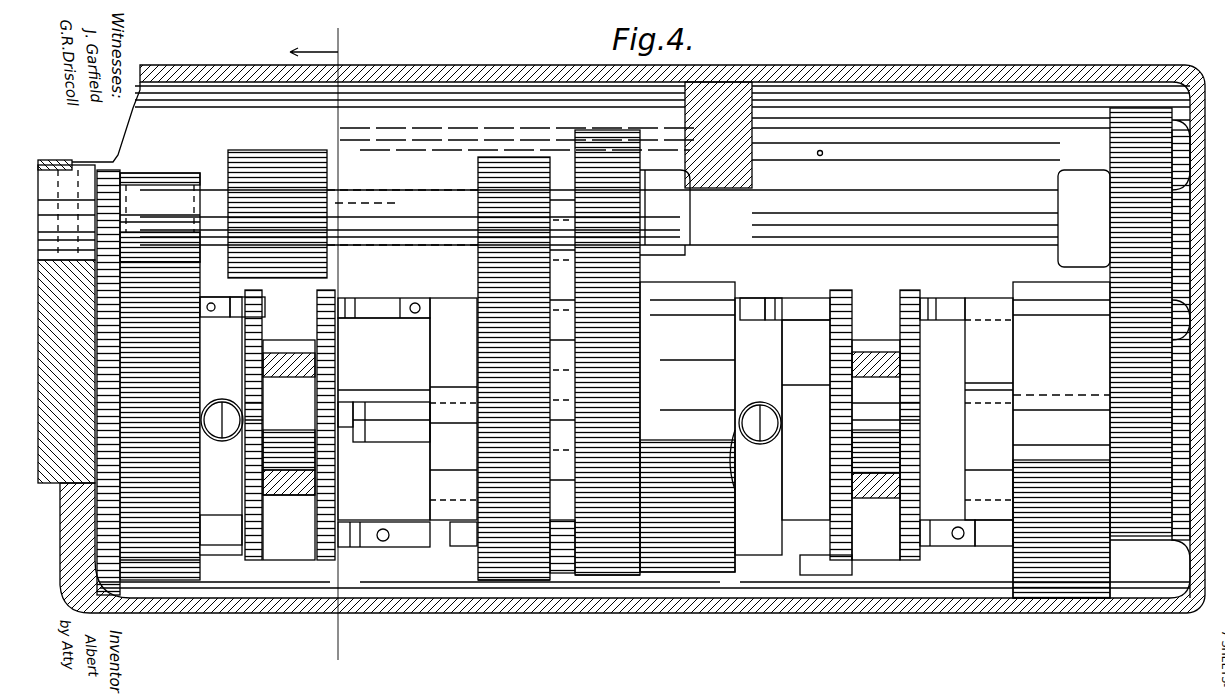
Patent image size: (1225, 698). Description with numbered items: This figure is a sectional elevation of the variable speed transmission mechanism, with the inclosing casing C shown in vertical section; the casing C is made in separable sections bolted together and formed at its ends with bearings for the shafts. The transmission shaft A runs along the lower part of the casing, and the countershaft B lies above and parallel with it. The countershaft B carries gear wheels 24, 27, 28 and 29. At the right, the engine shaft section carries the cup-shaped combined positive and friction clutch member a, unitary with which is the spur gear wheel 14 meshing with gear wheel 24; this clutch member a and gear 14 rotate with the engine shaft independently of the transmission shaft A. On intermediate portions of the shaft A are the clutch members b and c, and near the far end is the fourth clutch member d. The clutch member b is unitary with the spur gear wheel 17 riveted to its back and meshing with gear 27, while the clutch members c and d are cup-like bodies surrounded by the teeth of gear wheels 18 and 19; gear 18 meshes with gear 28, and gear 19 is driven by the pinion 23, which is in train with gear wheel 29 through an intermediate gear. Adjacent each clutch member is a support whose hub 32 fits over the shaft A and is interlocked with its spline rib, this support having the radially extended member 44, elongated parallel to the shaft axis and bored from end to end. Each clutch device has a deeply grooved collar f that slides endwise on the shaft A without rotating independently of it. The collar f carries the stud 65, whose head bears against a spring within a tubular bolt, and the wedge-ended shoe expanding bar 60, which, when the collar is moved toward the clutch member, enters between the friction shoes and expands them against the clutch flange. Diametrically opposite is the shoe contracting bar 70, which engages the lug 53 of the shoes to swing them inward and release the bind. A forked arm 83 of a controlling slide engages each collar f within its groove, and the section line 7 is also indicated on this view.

The section line 7 is at (321, 350).
The spur gear wheel 14 is at (1125, 397).
The spur gear wheel 17 is at (625, 575).
The gear wheel 18 is at (480, 550).
The spur gear wheel 19 is at (195, 558).
The pinion 23 is at (162, 175).
The gear wheel 24 is at (1120, 140).
The gear wheel 27 is at (620, 132).
The gear wheel 28 is at (516, 157).
The gear wheel 29 is at (302, 150).
The hub 32 is at (222, 398).
The radially extended member 44 is at (391, 422).
The lug 53 is at (208, 318).
The shoe expanding bar 60 is at (398, 298).
The stud 65 is at (343, 415).
The friction shoe contracting bar 70 is at (245, 308).
The forked arm 83 is at (288, 495).
The transmission shaft A is at (395, 400).
The countershaft B is at (625, 191).
The casing C is at (643, 111).
The combined positive and friction clutch member a is at (1061, 440).
The combined positive and friction clutch member b is at (686, 390).
The combined positive and friction clutch member c is at (562, 386).
The combined positive and friction clutch member d is at (150, 421).
The collar f is at (582, 436).